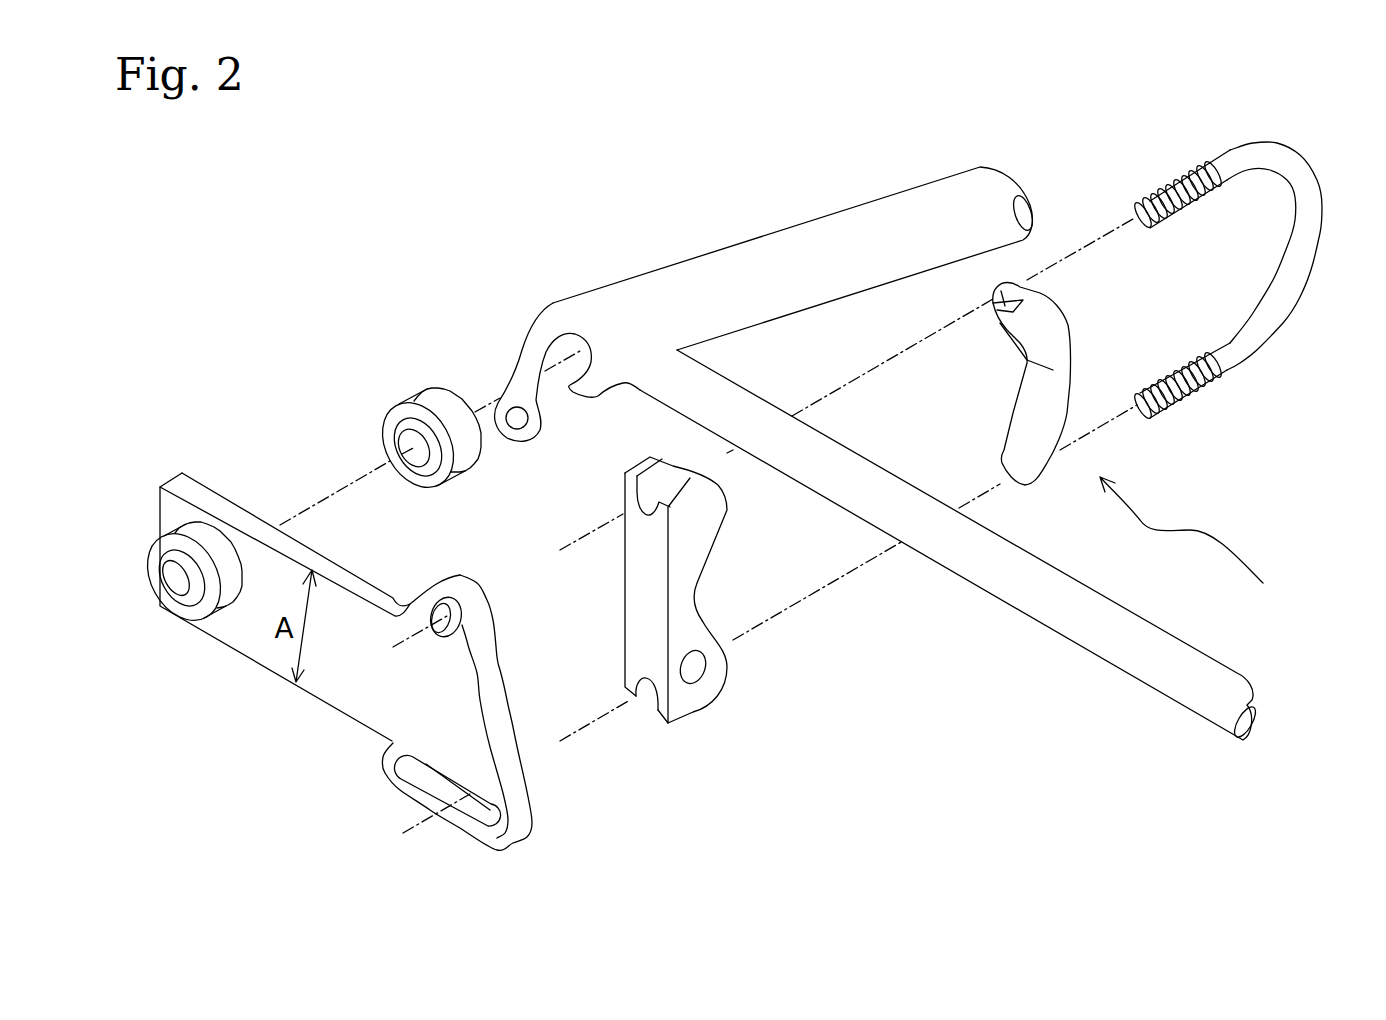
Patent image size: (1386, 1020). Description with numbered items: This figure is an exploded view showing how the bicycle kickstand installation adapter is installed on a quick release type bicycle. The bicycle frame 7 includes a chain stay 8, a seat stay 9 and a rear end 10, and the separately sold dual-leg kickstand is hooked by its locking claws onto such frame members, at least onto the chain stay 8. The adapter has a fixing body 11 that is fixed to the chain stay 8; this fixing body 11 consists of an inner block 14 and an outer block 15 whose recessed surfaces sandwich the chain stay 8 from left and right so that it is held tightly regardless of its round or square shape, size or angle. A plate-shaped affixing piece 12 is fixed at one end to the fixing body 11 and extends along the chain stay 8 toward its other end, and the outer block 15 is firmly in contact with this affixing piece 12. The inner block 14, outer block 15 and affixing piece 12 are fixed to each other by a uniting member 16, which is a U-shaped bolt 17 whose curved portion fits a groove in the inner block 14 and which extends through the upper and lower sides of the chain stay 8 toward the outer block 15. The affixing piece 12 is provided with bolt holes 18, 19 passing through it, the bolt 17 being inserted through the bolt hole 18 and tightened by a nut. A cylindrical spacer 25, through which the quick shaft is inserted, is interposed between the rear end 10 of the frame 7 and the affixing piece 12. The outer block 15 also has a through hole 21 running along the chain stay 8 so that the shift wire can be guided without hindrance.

The frame 7 is at (849, 473).
The chain stay 8 is at (1177, 673).
The seat stay 9 is at (748, 258).
The rear end 10 is at (550, 317).
The fixing body 11 is at (1199, 548).
The affixing piece 12 is at (352, 634).
The inner block 14 is at (1067, 341).
The outer block 15 is at (734, 606).
The uniting member 16 is at (1258, 308).
The bolt 17 is at (1273, 337).
The bolt hole 18 is at (452, 620).
The bolt hole 19 is at (428, 793).
The through hole 21 is at (700, 668).
The spacer 25 is at (405, 392).